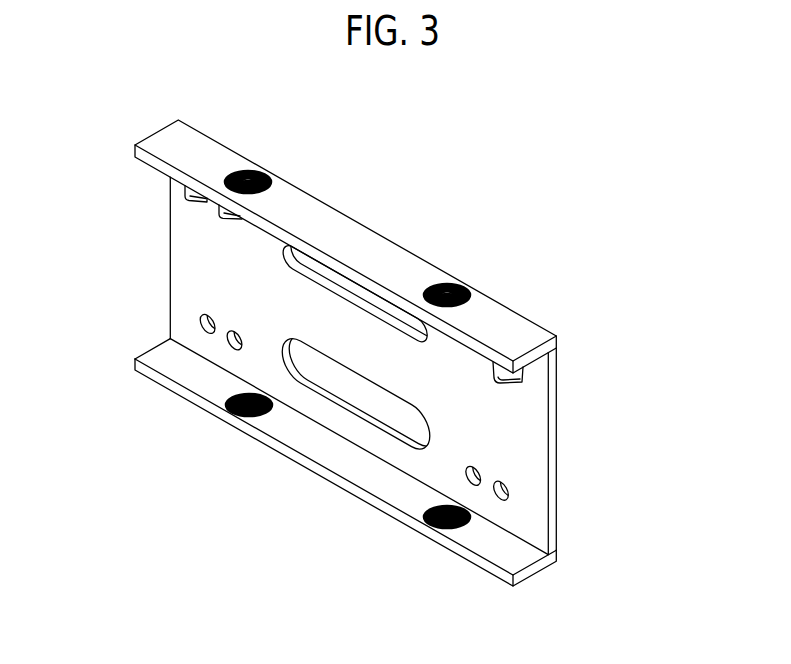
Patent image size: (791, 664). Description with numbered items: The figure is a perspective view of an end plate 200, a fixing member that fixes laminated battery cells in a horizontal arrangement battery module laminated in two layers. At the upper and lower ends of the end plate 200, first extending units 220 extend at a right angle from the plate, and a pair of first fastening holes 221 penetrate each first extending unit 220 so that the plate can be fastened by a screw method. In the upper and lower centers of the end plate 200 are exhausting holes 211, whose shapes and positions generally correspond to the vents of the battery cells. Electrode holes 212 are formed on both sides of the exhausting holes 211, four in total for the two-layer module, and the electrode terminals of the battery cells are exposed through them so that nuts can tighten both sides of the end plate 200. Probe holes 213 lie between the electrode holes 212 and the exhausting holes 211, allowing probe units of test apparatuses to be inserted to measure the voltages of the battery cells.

The end plate 200 is at (661, 124).
The exhausting hole 211 is at (472, 318).
The electrode hole 212 is at (187, 184).
The probe hole 213 is at (220, 204).
The first extending unit 220 is at (354, 229).
The first fastening hole 221 is at (450, 288).